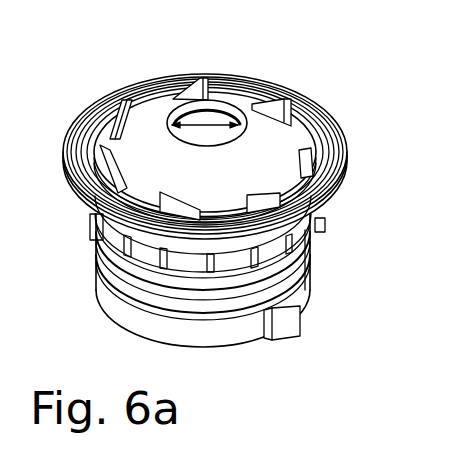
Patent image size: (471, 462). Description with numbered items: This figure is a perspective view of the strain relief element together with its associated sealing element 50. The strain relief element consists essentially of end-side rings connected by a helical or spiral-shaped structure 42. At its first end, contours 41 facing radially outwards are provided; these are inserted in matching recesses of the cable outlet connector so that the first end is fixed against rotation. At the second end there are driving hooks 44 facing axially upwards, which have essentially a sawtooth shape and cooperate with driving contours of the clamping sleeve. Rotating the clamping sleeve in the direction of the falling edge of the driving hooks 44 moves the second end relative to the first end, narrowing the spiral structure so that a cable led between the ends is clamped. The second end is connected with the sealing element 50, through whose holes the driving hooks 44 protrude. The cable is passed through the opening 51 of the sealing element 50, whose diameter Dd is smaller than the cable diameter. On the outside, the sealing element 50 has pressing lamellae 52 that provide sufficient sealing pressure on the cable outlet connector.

The contours 41 is at (290, 322).
The helical or spiral-shaped structure 42 is at (308, 264).
The driving hooks 44 is at (104, 108).
The sealing element 50 is at (268, 143).
The opening 51 is at (218, 118).
The pressing lamellae 52 is at (322, 158).
The diameter of the opening Dd is at (192, 106).